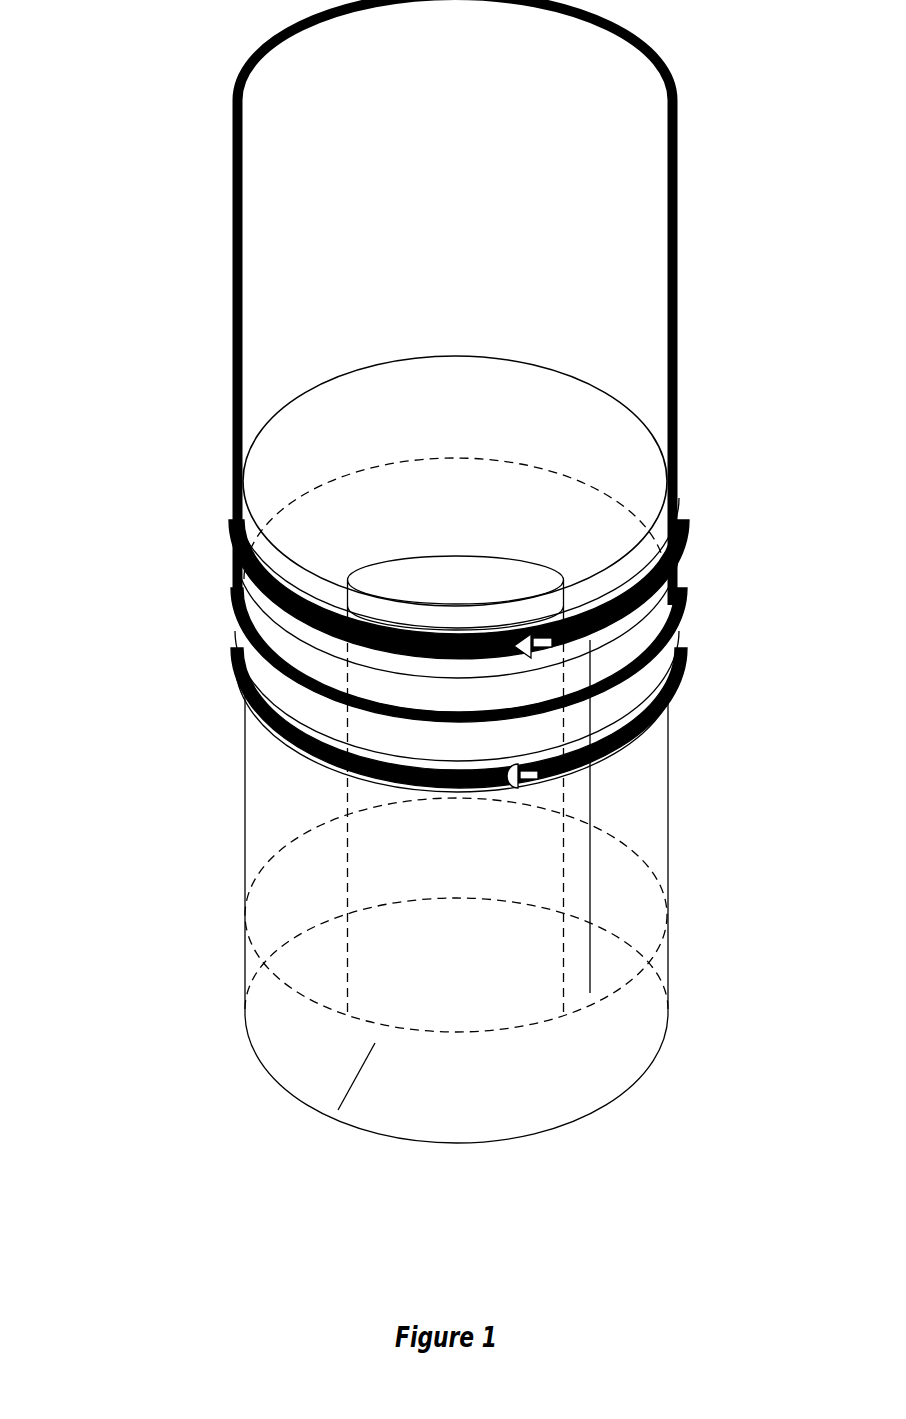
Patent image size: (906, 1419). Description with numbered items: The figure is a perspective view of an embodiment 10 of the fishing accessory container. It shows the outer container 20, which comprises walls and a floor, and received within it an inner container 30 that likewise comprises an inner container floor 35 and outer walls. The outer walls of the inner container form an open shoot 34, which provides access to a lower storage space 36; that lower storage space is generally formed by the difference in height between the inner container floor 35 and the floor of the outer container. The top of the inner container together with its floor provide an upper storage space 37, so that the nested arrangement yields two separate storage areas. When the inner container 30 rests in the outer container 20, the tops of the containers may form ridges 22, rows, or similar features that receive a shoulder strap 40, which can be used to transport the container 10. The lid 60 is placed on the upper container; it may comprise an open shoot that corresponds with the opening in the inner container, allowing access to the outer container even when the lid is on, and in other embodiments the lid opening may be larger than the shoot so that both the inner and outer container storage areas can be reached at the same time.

The embodiment 10 is at (683, 1062).
The outer container 20 is at (255, 966).
The ridges 22 is at (270, 612).
The inner container 30 is at (275, 782).
The open shoot 34 is at (457, 578).
The inner container floor 35 is at (258, 896).
The lower storage space 36 is at (357, 1077).
The upper storage space 37 is at (590, 763).
The shoulder strap 40 is at (243, 78).
The lid 60 is at (290, 452).